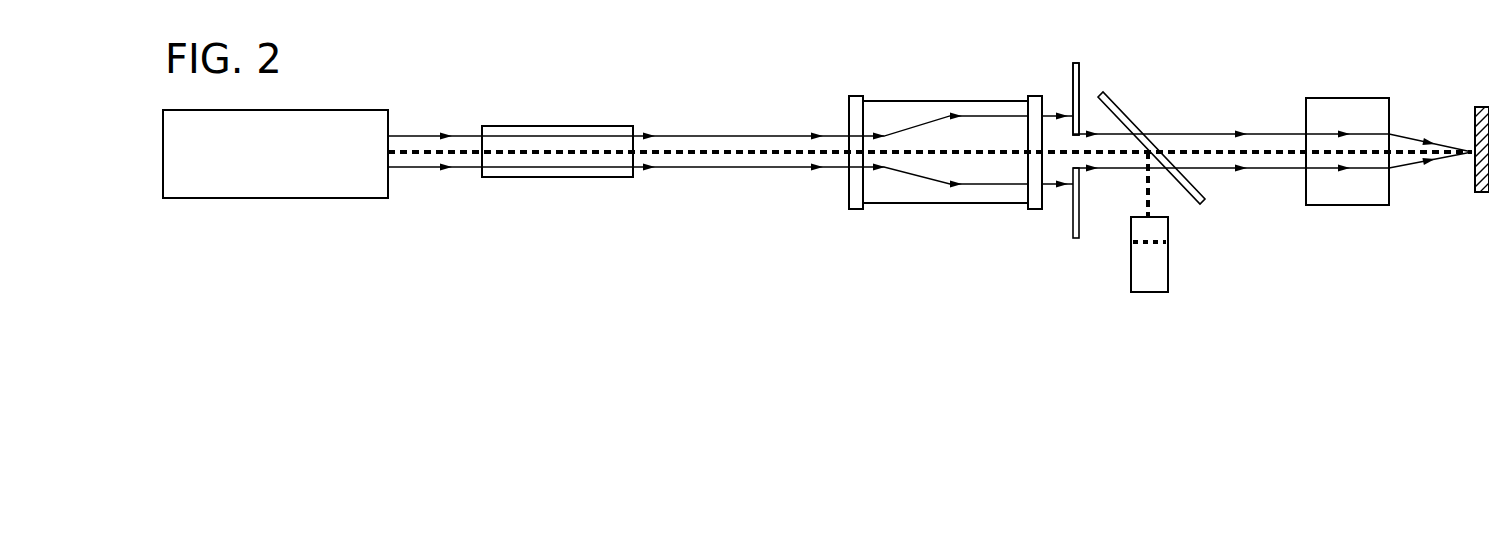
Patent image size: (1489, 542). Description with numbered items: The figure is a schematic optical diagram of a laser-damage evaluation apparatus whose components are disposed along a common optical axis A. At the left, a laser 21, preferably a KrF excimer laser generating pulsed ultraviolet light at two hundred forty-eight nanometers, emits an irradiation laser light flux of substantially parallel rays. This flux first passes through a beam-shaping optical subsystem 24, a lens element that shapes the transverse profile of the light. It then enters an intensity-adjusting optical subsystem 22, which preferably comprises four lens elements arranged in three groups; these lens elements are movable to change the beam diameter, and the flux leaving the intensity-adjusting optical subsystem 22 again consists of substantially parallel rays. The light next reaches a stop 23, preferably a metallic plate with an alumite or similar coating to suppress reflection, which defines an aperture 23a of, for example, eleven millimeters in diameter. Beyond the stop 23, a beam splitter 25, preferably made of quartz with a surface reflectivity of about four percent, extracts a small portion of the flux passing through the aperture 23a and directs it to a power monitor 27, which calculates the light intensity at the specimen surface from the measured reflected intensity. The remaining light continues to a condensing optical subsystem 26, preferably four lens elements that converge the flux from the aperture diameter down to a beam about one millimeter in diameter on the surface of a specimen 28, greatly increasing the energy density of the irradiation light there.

The laser 21 is at (277, 199).
The optical axis A is at (408, 155).
The beam-shaping optical subsystem 24 is at (558, 178).
The intensity-adjusting optical subsystem 22 is at (950, 204).
The stop 23 is at (1070, 230).
The aperture 23a is at (1079, 133).
The beam splitter 25 is at (1202, 203).
The power monitor 27 is at (1147, 292).
The condensing optical subsystem 26 is at (1338, 206).
The specimen 28 is at (1480, 193).